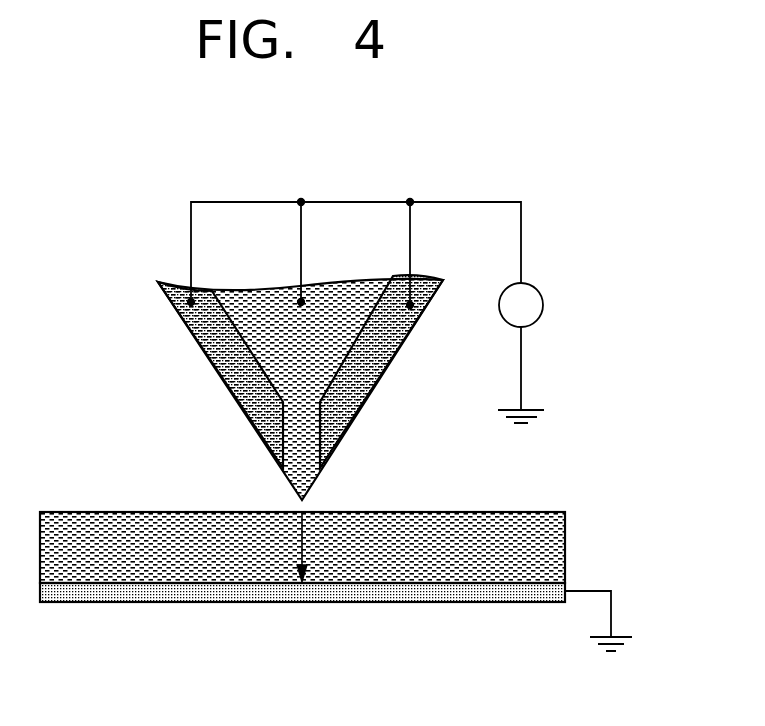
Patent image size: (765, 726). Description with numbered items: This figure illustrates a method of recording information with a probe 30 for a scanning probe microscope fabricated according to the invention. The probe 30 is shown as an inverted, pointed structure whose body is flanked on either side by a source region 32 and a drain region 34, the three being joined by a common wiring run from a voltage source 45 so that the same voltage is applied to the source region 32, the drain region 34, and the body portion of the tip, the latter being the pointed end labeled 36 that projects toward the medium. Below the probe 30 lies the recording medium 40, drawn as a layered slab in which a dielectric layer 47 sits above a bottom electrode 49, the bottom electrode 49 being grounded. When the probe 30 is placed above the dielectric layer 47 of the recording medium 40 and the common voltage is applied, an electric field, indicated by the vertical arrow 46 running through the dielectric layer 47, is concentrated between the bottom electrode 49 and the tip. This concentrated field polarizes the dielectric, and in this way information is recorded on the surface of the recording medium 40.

The probe 30 is at (249, 390).
The source region 32 is at (250, 402).
The drain region 34 is at (350, 402).
The resistive tip 36 is at (300, 466).
The recording medium 40 is at (348, 539).
The voltage source 45 is at (540, 296).
The electric field 46 is at (304, 544).
The dielectric layer 47 is at (555, 556).
The bottom electrode 49 is at (480, 597).